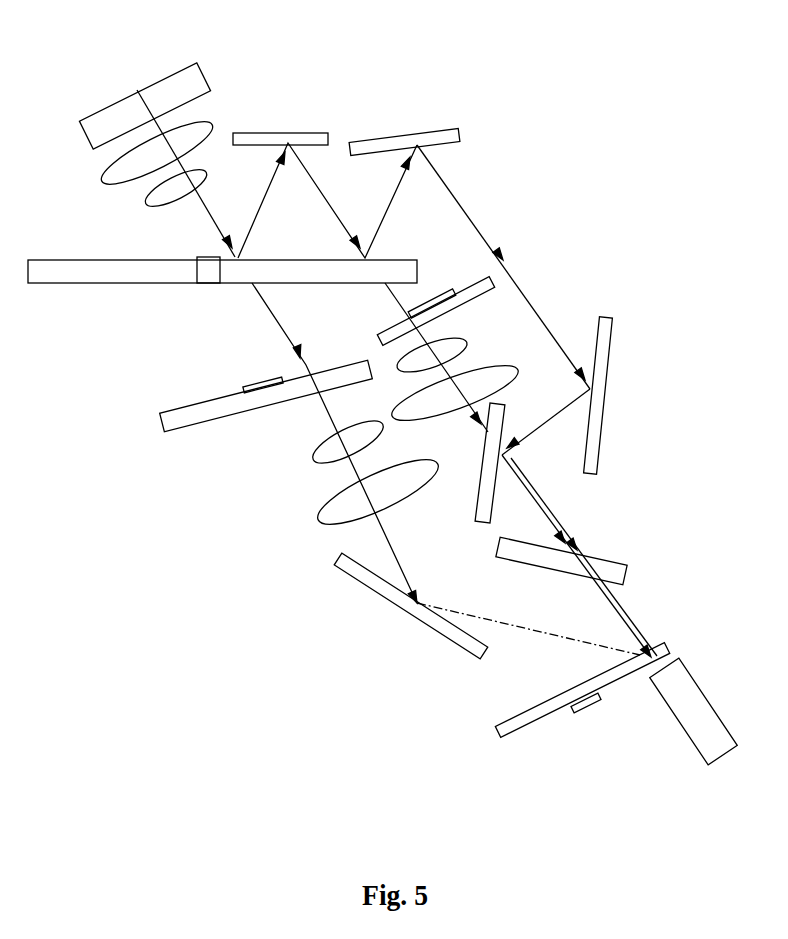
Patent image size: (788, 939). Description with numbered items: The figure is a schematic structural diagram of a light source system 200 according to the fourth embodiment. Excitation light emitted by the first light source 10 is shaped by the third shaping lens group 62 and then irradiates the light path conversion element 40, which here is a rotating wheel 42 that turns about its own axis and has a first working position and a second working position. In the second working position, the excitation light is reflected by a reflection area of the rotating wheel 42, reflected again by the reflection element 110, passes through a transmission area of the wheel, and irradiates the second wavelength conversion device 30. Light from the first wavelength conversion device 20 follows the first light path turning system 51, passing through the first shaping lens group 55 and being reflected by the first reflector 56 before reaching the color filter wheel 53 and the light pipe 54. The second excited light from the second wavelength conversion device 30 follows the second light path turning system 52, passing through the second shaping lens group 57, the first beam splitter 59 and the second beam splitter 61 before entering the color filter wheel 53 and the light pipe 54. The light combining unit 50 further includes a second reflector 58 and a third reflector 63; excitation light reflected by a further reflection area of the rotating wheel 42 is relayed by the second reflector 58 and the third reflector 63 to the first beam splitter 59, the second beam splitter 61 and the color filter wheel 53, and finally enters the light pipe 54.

The light source system 200 is at (395, 433).
The first light source 10 is at (138, 104).
The third shaping lens group 62 is at (108, 199).
The reflection element 110 is at (313, 138).
The second reflector 58 is at (438, 132).
The light path conversion element 40 is at (138, 273).
The rotating wheel 42 is at (161, 310).
The second light path turning system 52 is at (503, 260).
The third reflector 63 is at (603, 317).
The second wavelength conversion device 30 is at (473, 283).
The second shaping lens group 57 is at (480, 355).
The first wavelength conversion device 20 is at (211, 413).
The first light path turning system 51 is at (322, 605).
The first shaping lens group 55 is at (310, 488).
The first reflector 56 is at (397, 603).
The first beam splitter 59 is at (479, 491).
The light combining unit 50 is at (613, 752).
The second beam splitter 61 is at (605, 562).
The color filter wheel 53 is at (530, 721).
The light pipe 54 is at (688, 680).